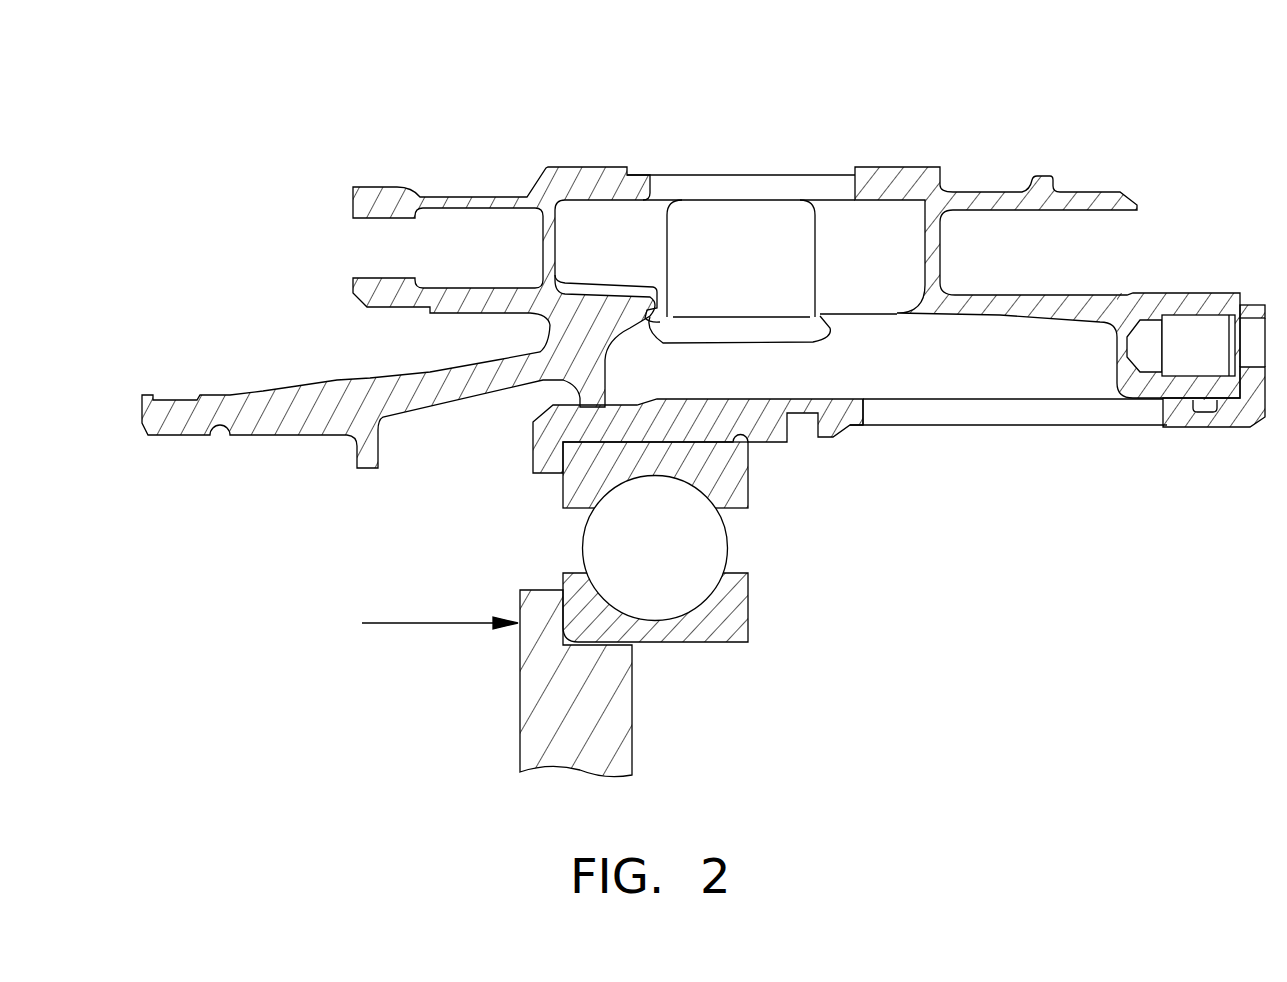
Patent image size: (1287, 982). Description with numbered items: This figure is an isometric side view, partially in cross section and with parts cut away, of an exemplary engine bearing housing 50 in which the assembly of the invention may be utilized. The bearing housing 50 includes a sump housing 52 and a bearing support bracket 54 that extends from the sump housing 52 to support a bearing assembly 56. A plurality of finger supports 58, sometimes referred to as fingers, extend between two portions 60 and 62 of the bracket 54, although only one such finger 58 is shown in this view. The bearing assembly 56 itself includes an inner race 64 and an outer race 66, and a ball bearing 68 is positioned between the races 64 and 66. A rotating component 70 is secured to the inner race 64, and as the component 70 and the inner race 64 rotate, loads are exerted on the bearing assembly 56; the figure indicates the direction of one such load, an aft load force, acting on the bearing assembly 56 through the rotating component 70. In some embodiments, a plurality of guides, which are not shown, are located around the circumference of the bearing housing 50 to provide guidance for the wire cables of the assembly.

The engine bearing housing 50 is at (338, 88).
The sump housing 52 is at (928, 150).
The bearing support bracket 54 is at (1124, 478).
The bearing assembly 56 is at (637, 542).
The finger support 58 is at (915, 414).
The portion of bracket 60 is at (1193, 417).
The portion of bracket 62 is at (545, 450).
The inner race 64 is at (730, 620).
The outer race 66 is at (727, 468).
The ball bearing 68 is at (667, 569).
The rotating component 70 is at (540, 703).